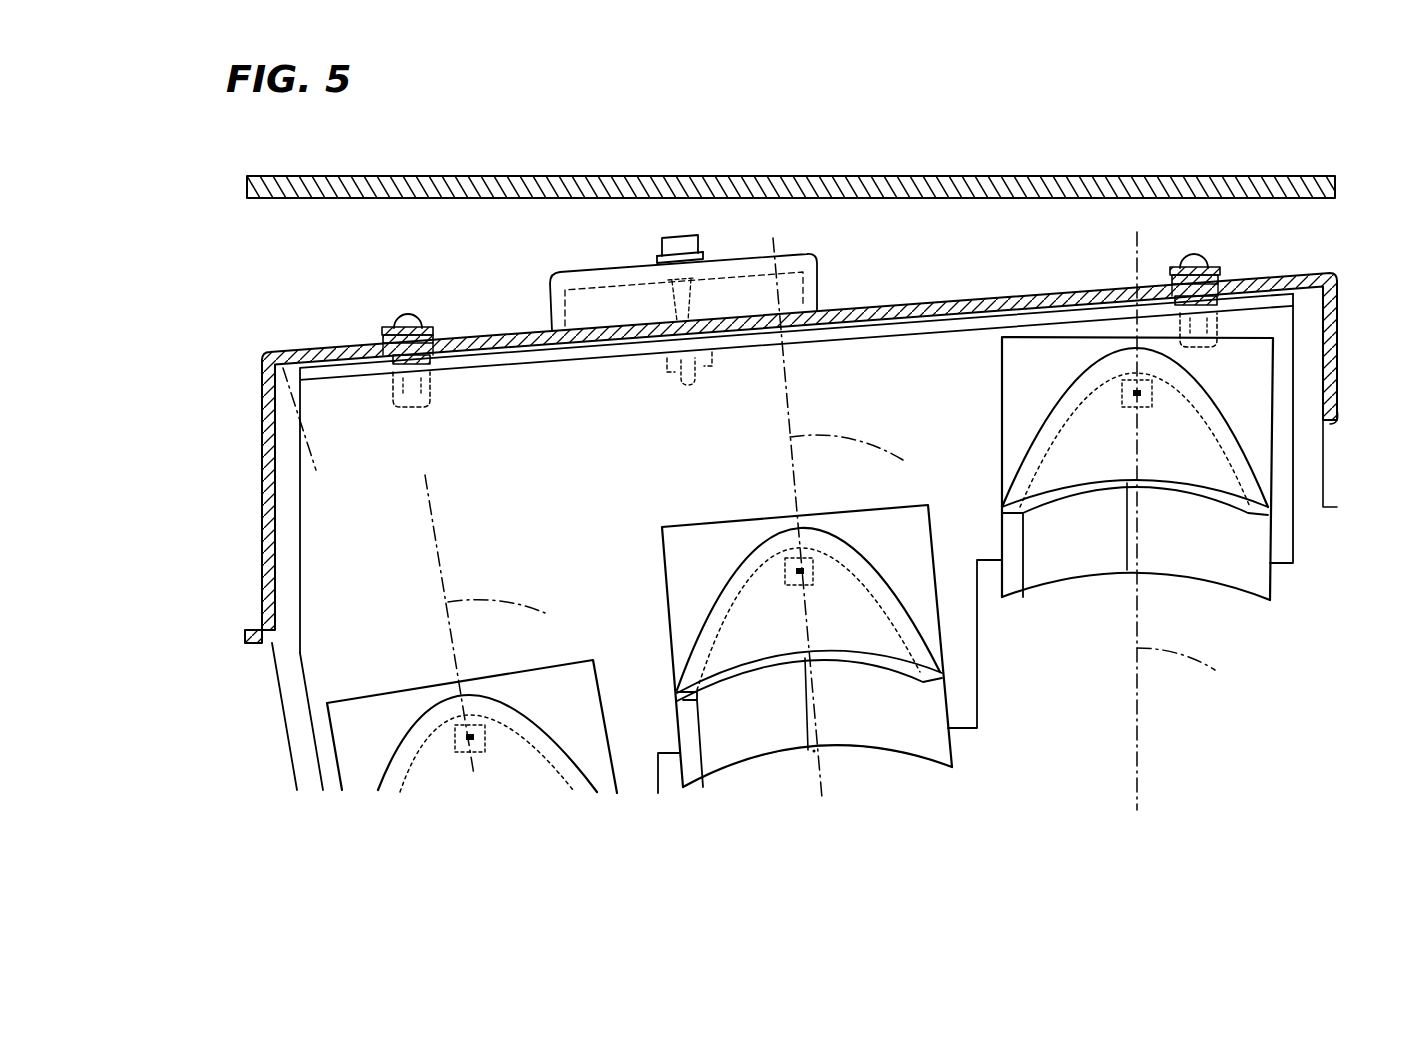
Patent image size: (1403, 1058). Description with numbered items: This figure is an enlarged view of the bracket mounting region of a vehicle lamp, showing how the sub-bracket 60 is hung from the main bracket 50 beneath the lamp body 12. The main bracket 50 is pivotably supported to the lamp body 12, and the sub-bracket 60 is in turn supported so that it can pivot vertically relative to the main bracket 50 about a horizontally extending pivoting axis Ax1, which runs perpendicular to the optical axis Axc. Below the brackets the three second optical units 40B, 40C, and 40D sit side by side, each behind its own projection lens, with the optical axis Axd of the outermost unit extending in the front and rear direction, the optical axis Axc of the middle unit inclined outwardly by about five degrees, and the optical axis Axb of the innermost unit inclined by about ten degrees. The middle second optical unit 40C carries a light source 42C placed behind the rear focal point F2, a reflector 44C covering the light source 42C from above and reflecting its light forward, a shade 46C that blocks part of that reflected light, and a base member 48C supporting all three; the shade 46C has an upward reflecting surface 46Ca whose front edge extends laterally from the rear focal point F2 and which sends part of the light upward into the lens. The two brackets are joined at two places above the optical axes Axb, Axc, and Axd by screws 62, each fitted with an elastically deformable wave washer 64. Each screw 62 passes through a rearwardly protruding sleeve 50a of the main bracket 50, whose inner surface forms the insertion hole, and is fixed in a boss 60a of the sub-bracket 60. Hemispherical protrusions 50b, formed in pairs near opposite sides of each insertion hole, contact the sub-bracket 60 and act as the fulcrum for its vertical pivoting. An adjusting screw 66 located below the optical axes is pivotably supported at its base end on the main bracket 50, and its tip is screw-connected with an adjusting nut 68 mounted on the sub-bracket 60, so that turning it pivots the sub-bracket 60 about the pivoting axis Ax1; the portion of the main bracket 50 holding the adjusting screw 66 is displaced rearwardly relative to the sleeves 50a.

The lamp body 12 is at (497, 176).
The main bracket 50 is at (882, 304).
The sleeve 50a is at (438, 343).
The protrusion 50b is at (395, 358).
The sub-bracket 60 is at (984, 314).
The boss 60a is at (414, 408).
The screw 62 is at (410, 316).
The wave washer 64 is at (384, 331).
The adjusting screw 66 is at (681, 236).
The adjusting nut 68 is at (668, 362).
The second optical unit 40B is at (400, 675).
The second optical unit 40C is at (648, 535).
The second optical unit 40D is at (990, 378).
The light source 42C is at (801, 570).
The reflector 44C is at (752, 617).
The shade 46C is at (918, 708).
The upward reflecting surface 46Ca is at (772, 728).
The base member 48C is at (722, 537).
The rear focal point F2 is at (818, 752).
The pivoting axis Ax1 is at (314, 430).
The optical axis Axb is at (504, 625).
The optical axis Axc is at (856, 518).
The optical axis Axd is at (1197, 521).